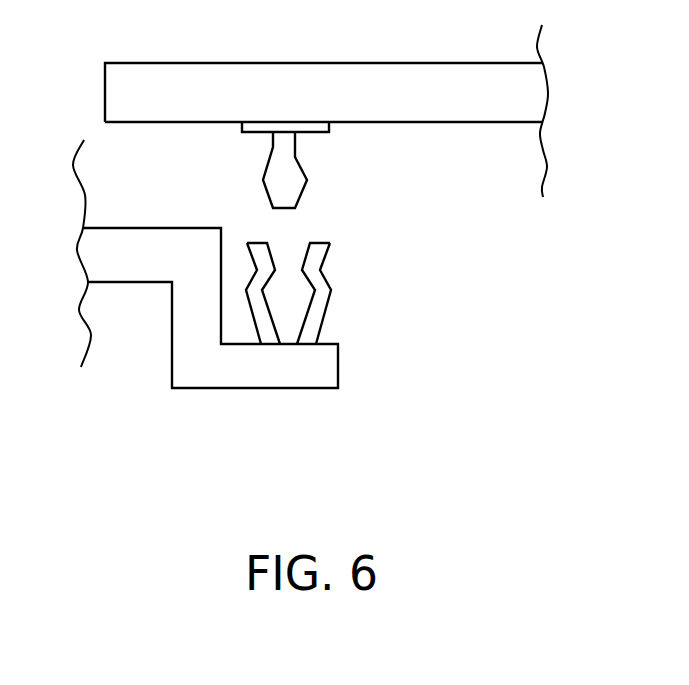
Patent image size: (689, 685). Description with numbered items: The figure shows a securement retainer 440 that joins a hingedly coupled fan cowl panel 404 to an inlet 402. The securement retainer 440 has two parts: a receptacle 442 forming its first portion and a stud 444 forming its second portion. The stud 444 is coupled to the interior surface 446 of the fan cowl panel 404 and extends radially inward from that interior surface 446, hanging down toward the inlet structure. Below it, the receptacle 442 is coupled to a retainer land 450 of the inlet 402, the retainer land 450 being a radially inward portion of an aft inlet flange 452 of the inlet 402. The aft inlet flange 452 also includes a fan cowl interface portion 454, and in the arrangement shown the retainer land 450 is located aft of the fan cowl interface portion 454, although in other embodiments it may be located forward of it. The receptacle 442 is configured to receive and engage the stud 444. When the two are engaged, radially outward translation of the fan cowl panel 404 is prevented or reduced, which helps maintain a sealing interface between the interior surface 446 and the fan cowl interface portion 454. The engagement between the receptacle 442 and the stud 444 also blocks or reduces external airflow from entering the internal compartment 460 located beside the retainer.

The inlet 402 is at (124, 206).
The fan cowl panel 404 is at (453, 80).
The securement retainer 440 is at (374, 233).
The receptacle 442 is at (346, 264).
The stud 444 is at (333, 178).
The interior surface 446 is at (500, 123).
The retainer land 450 is at (265, 365).
The aft inlet flange 452 is at (308, 462).
The fan cowl interface portion 454 is at (135, 272).
The internal compartment 460 is at (434, 410).